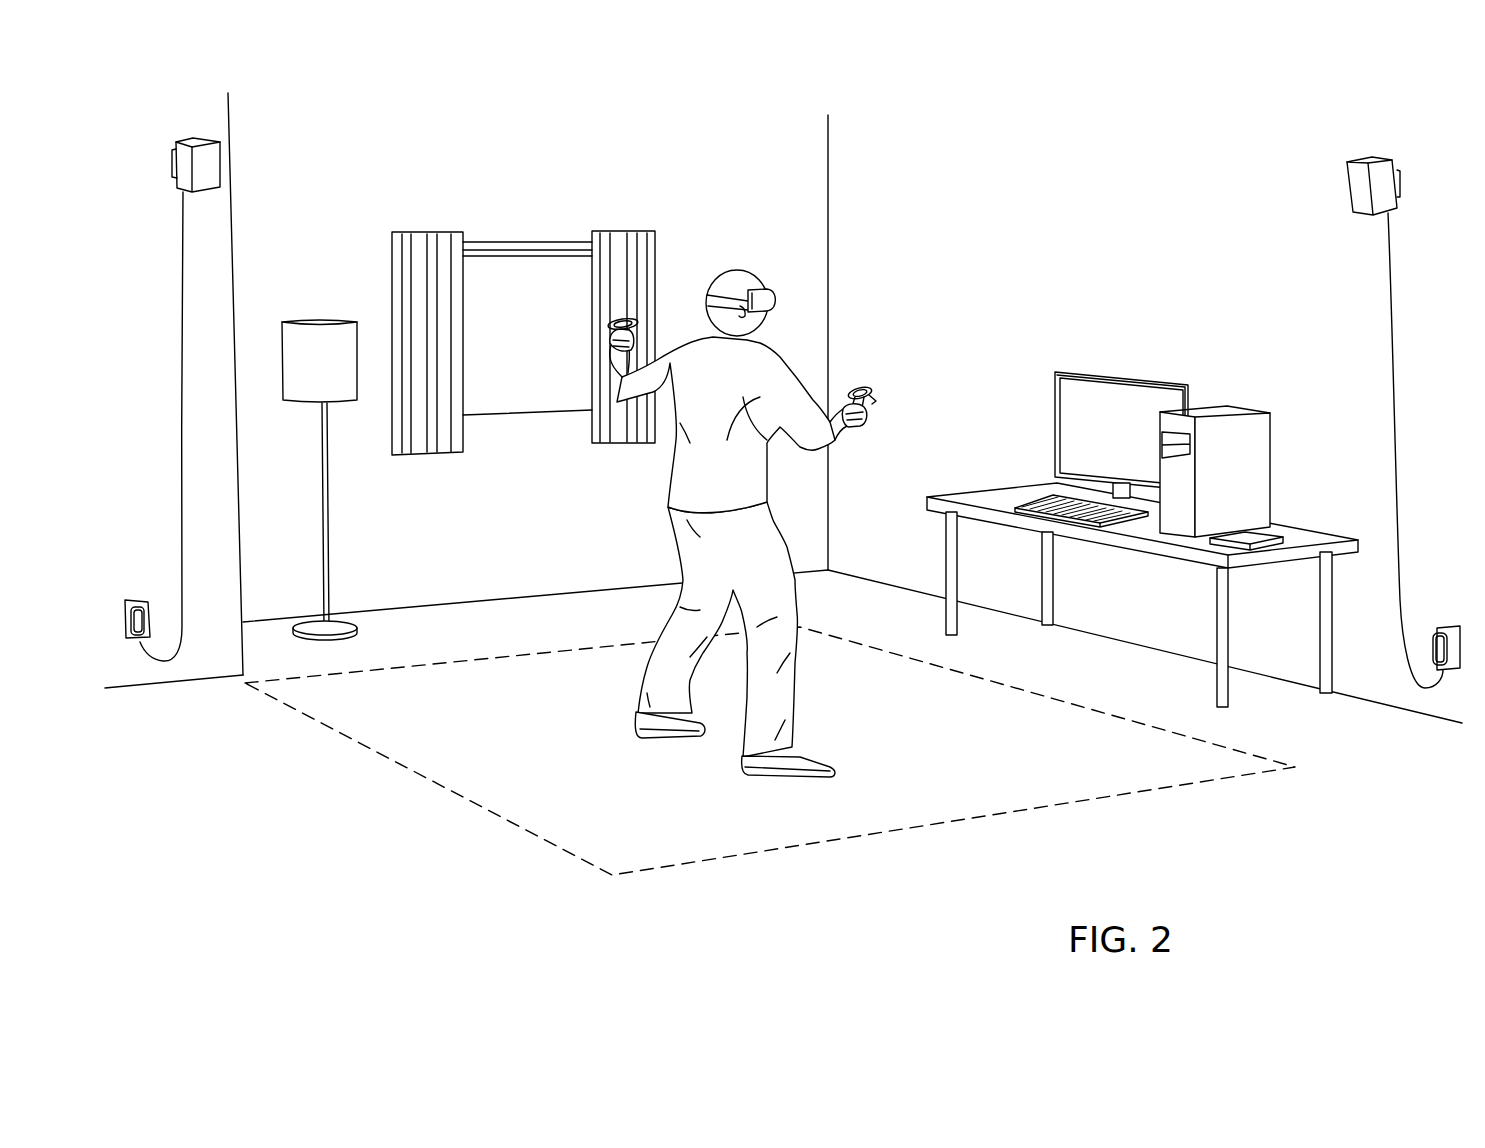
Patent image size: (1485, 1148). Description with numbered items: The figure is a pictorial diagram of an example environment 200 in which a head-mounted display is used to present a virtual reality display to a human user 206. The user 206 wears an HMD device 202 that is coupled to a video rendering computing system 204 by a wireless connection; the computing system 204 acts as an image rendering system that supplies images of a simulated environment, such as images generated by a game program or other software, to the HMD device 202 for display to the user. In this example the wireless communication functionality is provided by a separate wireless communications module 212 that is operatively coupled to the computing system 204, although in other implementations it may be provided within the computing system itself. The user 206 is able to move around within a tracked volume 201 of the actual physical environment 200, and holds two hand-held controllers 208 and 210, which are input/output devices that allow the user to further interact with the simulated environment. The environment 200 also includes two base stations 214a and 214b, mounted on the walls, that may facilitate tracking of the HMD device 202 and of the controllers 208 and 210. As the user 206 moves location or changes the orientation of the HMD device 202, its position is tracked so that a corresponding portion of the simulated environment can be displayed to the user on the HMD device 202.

The environment 200 is at (1200, 96).
The tracked volume 201 is at (357, 712).
The HMD device 202 is at (764, 292).
The video rendering computing system 204 is at (1207, 408).
The human user 206 is at (620, 413).
The hand-held controller 208 is at (626, 321).
The hand-held controller 210 is at (862, 388).
The wireless communications module 212 is at (1250, 533).
The base station 214a is at (212, 164).
The base station 214b is at (1358, 186).